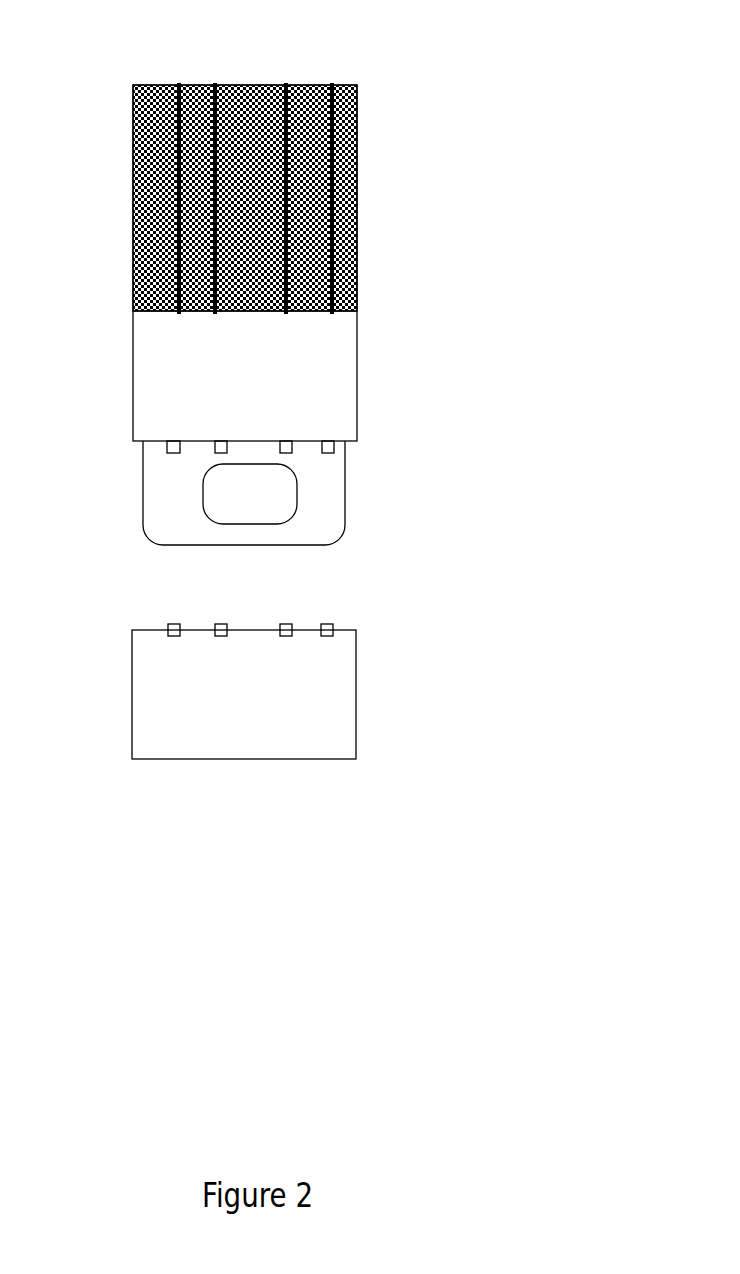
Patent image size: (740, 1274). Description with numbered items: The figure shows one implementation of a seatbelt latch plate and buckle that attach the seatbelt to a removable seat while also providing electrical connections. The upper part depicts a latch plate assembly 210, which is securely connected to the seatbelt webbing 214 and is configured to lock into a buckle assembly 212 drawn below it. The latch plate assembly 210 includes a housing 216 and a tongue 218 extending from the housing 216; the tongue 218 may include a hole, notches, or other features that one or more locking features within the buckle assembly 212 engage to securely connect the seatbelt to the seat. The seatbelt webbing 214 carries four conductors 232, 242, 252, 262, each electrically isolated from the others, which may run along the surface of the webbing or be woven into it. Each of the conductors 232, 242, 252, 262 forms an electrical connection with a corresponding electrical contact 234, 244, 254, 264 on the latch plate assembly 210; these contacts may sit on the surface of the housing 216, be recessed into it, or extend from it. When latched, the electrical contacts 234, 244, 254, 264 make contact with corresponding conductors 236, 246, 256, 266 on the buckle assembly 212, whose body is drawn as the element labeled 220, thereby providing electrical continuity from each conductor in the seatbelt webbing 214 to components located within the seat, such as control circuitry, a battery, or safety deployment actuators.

The latch plate assembly 210 is at (90, 245).
The buckle assembly 212 is at (108, 682).
The seatbelt webbing 214 is at (357, 203).
The housing 216 is at (357, 338).
The tongue 218 is at (345, 510).
The receptacle body 220 is at (356, 704).
The conductor 232 is at (173, 83).
The conductor 242 is at (219, 83).
The conductor 252 is at (286, 83).
The conductor 262 is at (330, 83).
The electrical contact 234 is at (170, 441).
The electrical contact 244 is at (217, 441).
The electrical contact 254 is at (283, 441).
The electrical contact 264 is at (324, 441).
The conductor 236 is at (175, 636).
The conductor 246 is at (222, 636).
The conductor 256 is at (288, 636).
The conductor 266 is at (329, 636).